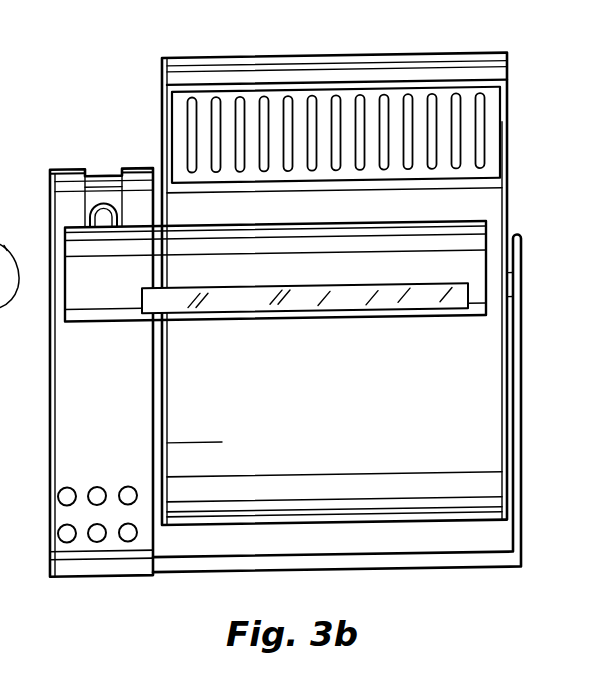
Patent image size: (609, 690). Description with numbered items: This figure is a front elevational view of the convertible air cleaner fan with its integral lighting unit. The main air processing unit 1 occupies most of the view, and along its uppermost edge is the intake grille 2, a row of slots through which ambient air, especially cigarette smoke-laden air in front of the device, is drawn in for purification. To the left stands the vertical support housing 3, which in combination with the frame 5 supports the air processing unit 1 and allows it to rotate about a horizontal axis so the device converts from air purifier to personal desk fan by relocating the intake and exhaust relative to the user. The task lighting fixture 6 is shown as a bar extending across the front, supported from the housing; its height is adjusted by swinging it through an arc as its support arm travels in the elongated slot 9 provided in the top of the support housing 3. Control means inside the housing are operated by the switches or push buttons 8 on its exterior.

The main air processing unit 1 is at (334, 68).
The intake grille 2 is at (182, 117).
The vertical support housing 3 is at (68, 386).
The frame 5 is at (448, 556).
The task lighting fixture 6 is at (362, 297).
The switches or push buttons 8 is at (68, 495).
The elongated slot 9 is at (105, 196).